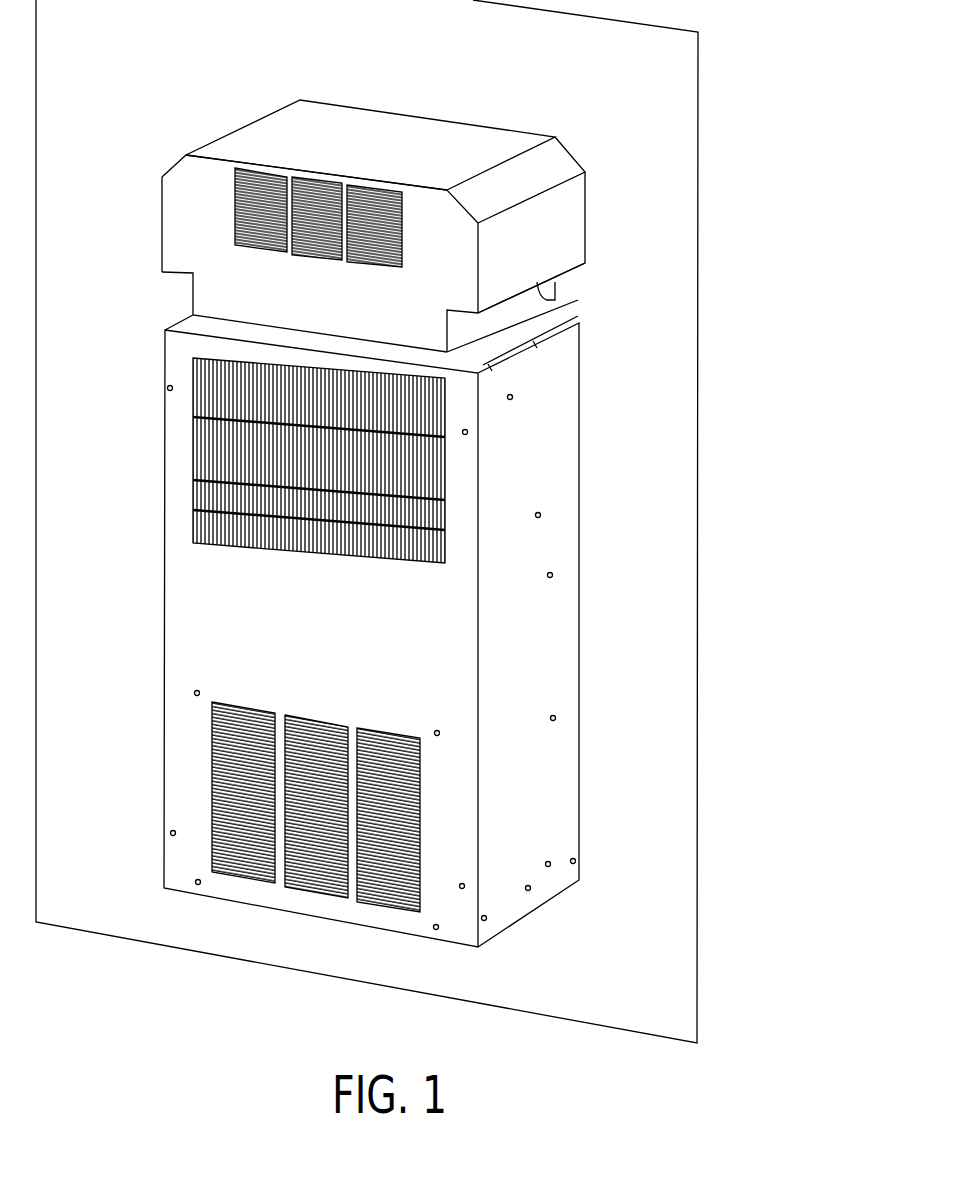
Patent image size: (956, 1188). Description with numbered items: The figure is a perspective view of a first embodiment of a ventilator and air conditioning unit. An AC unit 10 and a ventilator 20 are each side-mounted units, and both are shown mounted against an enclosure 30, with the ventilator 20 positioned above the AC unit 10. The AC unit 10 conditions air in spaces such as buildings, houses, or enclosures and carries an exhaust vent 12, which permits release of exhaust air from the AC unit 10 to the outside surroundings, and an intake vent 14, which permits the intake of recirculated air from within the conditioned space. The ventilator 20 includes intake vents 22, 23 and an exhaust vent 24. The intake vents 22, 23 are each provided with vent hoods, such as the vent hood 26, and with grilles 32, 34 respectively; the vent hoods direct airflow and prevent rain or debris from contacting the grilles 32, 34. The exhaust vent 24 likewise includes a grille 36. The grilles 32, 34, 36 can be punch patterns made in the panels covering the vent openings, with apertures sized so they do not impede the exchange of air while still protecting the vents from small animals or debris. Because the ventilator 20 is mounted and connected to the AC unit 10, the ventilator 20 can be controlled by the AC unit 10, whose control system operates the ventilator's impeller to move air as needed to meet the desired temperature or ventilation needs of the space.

The AC unit 10 is at (605, 678).
The exhaust vent 12 is at (440, 478).
The intake vent 14 is at (423, 845).
The ventilator 20 is at (658, 145).
The intake vent 22 is at (176, 273).
The intake vent 23 is at (548, 305).
The exhaust vent 24 is at (236, 203).
The vent hood 26 is at (572, 220).
The enclosure 30 is at (657, 530).
The grille 32 is at (565, 252).
The grille 34 is at (161, 247).
The grille 36 is at (320, 177).